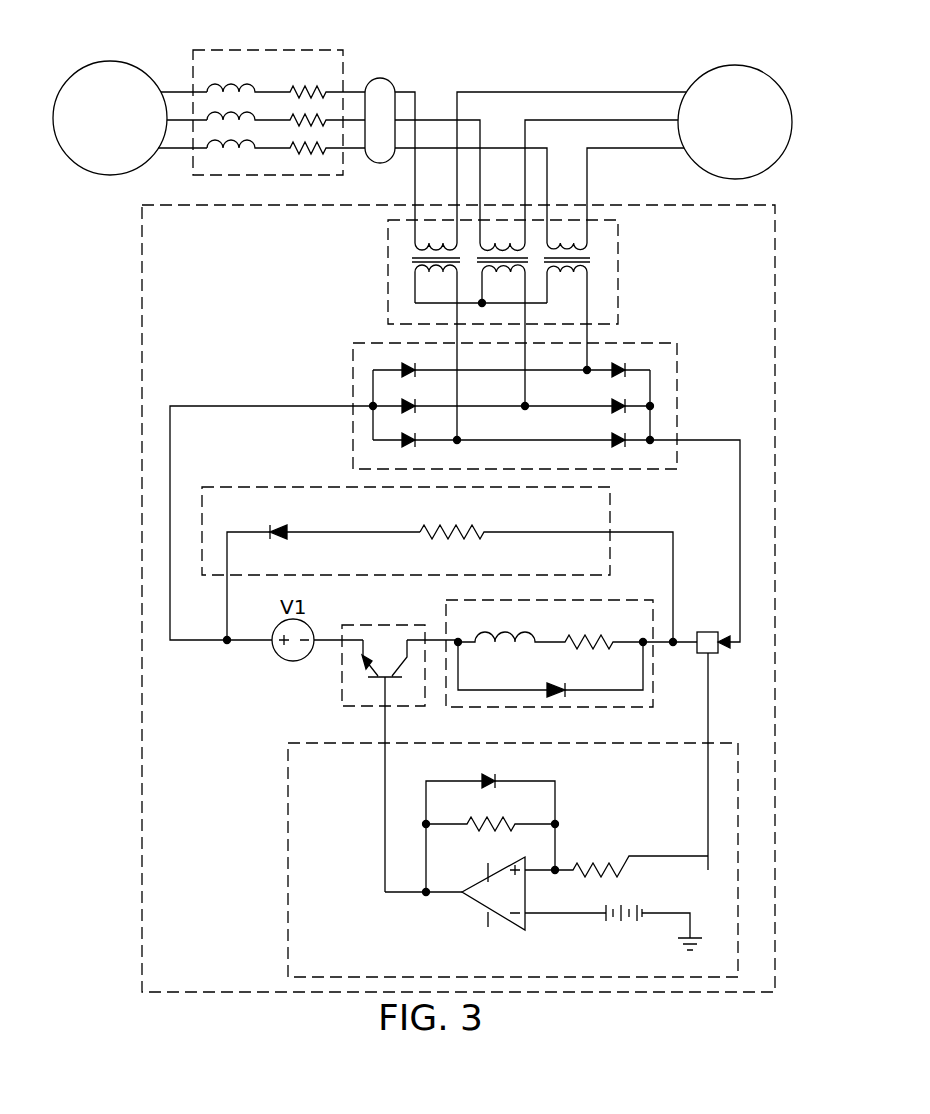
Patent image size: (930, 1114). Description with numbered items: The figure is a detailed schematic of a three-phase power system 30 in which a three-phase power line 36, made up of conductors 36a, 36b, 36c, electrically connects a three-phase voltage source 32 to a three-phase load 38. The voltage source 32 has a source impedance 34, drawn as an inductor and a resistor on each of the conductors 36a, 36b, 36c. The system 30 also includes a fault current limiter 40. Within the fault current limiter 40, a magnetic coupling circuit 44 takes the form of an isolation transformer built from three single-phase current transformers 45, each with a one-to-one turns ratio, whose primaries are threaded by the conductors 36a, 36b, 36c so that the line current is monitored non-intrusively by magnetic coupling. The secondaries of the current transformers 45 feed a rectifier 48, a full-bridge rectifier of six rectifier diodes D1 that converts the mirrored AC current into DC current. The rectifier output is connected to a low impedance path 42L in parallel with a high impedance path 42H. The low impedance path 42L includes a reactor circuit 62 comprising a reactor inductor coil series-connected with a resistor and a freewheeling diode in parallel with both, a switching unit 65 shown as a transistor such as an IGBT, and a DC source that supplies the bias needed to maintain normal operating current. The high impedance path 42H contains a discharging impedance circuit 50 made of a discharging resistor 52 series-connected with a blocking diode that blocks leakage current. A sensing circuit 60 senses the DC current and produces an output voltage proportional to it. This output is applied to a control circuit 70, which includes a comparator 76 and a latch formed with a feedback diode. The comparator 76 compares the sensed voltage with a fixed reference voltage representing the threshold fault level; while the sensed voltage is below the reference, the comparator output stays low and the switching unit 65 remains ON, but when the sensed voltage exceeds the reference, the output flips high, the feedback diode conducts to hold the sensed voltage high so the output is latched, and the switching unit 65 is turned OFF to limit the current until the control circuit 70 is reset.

The three-phase power system 30 is at (170, 46).
The three-phase voltage source 32 is at (97, 176).
The source impedance 34 is at (275, 50).
The three-phase power line 36 is at (386, 72).
The conductor 36a is at (403, 90).
The conductor 36b is at (435, 118).
The conductor 36c is at (500, 147).
The three-phase load 38 is at (728, 64).
The fault current limiter 40 is at (142, 723).
The magnetic coupling circuit 44 is at (539, 303).
The single-phase current transformers 45 is at (568, 238).
The rectifier 48 is at (547, 391).
The rectifier diode D1 is at (617, 365).
The discharging impedance circuit 50 is at (406, 536).
The discharging resistor 52 is at (455, 538).
The high impedance path 42H is at (633, 532).
The low impedance path 42L is at (660, 645).
The sensing circuit 60 is at (710, 631).
The reactor circuit 62 is at (618, 708).
The switching unit 65 is at (342, 693).
The control circuit 70 is at (476, 860).
The comparator 76 is at (510, 922).